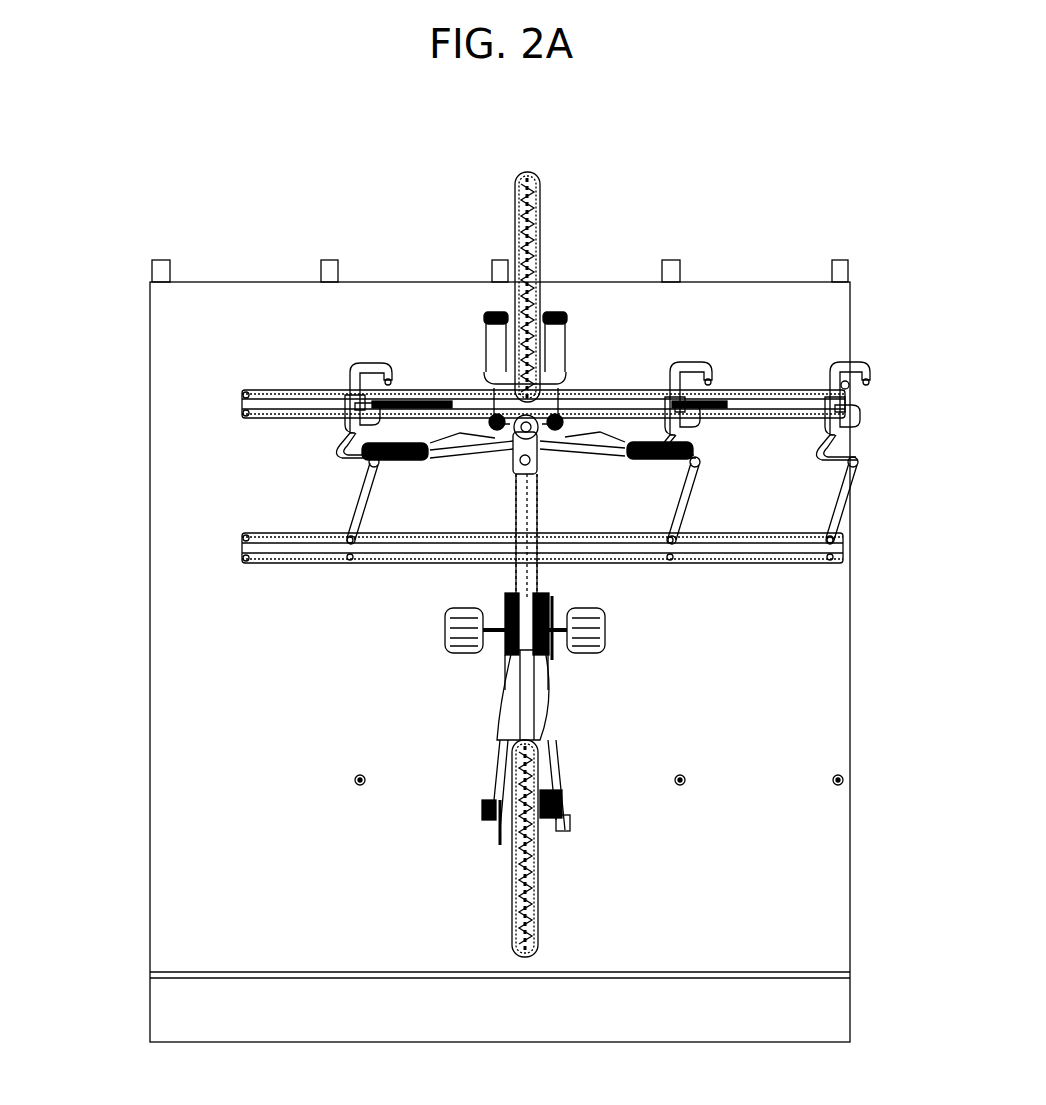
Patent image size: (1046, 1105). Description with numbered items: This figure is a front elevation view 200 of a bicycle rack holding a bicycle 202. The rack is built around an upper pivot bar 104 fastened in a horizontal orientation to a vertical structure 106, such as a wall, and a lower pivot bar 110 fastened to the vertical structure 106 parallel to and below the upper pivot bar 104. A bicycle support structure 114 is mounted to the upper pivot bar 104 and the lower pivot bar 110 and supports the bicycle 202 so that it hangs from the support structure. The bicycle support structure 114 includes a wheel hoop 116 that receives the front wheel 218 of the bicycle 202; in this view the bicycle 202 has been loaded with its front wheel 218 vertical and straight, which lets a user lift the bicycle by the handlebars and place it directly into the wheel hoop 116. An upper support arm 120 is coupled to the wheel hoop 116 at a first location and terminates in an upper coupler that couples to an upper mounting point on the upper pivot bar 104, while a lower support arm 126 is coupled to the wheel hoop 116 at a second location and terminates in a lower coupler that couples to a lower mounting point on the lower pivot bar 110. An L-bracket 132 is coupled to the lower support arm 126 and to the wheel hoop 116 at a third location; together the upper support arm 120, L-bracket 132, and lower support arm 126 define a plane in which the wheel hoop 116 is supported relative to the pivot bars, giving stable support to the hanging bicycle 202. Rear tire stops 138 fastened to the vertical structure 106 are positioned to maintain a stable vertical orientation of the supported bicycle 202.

The front elevation view 200 is at (333, 118).
The vertical structure 106 is at (194, 769).
The rear tire stop 138 is at (360, 793).
The upper pivot bar 104 is at (272, 420).
The lower pivot bar 110 is at (280, 565).
The bicycle support structure 114 is at (654, 367).
The wheel hoop 116 is at (372, 360).
The upper support arm 120 is at (850, 386).
The L-bracket 132 is at (336, 458).
The lower support arm 126 is at (372, 504).
The bicycle 202 is at (527, 551).
The front wheel 218 is at (542, 176).